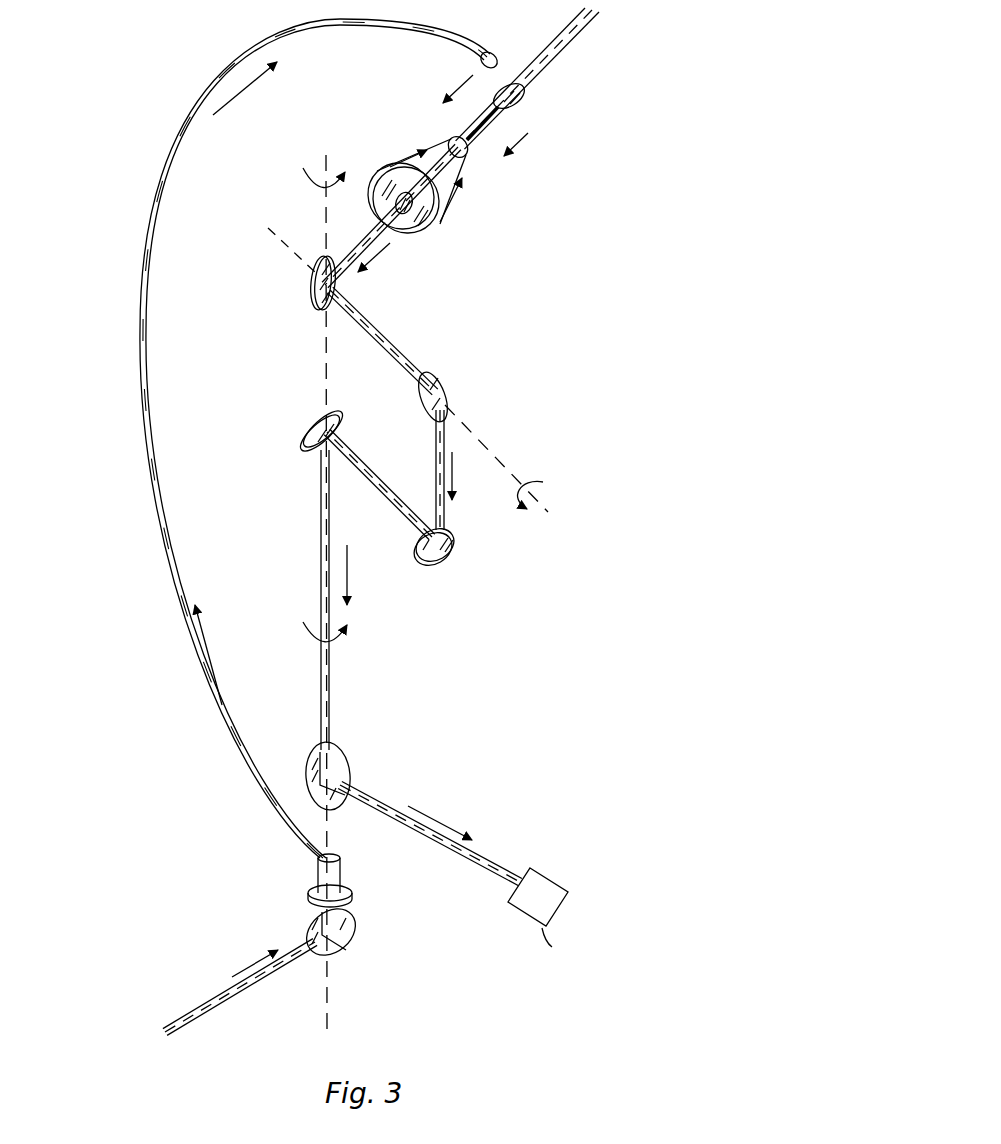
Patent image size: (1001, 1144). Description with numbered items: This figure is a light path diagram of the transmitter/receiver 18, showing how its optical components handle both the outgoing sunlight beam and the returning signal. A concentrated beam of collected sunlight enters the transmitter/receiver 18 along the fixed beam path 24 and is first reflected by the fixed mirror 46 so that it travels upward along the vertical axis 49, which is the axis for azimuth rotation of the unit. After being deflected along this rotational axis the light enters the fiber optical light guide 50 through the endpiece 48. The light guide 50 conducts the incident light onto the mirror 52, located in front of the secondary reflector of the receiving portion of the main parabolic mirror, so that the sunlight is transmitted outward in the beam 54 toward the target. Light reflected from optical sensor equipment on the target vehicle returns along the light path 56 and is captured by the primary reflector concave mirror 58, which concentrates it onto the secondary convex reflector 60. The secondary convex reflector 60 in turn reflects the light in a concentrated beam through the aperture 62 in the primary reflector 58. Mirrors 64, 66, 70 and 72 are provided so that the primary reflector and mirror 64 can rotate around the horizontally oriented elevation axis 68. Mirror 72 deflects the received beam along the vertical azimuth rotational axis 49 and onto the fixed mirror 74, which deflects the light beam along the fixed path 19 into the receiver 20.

The transmitter/receiver 18 is at (673, 563).
The fixed path 19 is at (491, 855).
The receiver 20 is at (553, 880).
The fixed beam path 24 is at (210, 995).
The fixed mirror 46 is at (352, 940).
The endpiece 48 is at (343, 873).
The vertical axis 49 is at (330, 838).
The fiber optical light guide 50 is at (157, 513).
The mirror 52 is at (527, 96).
The beam 54 is at (570, 46).
The light path 56 is at (530, 150).
The primary reflector concave mirror 58 is at (437, 222).
The secondary convex reflector 60 is at (455, 140).
The aperture 62 is at (433, 230).
The mirror 64 is at (313, 283).
The mirror 66 is at (441, 385).
The elevation axis 68 is at (472, 432).
The mirror 70 is at (456, 542).
The mirror 72 is at (312, 420).
The fixed mirror 74 is at (346, 764).